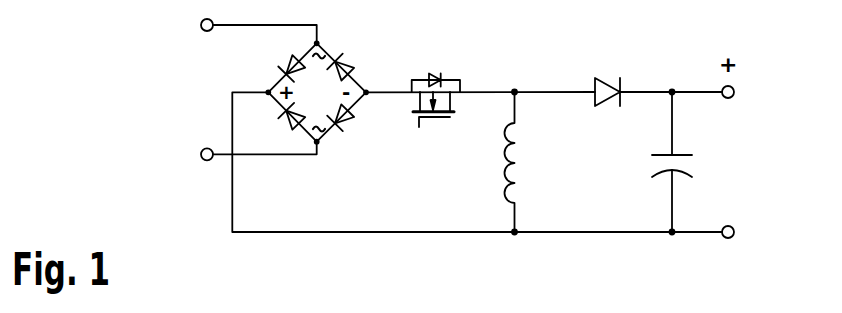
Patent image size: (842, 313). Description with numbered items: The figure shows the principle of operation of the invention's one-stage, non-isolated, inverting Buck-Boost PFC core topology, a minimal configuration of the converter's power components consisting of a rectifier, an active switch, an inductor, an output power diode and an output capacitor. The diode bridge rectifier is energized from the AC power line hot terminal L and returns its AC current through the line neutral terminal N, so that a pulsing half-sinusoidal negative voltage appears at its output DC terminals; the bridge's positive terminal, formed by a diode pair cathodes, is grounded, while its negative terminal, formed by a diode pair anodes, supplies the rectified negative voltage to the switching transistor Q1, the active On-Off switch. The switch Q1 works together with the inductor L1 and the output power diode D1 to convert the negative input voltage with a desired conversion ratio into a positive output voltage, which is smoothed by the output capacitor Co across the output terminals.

The AC power line hot terminal L is at (242, 28).
The line neutral terminal N is at (242, 155).
The switching transistor (MOSFET) Q1 is at (436, 82).
The inductor L1 is at (488, 162).
The diode D1 is at (614, 73).
The output capacitor Co is at (648, 162).